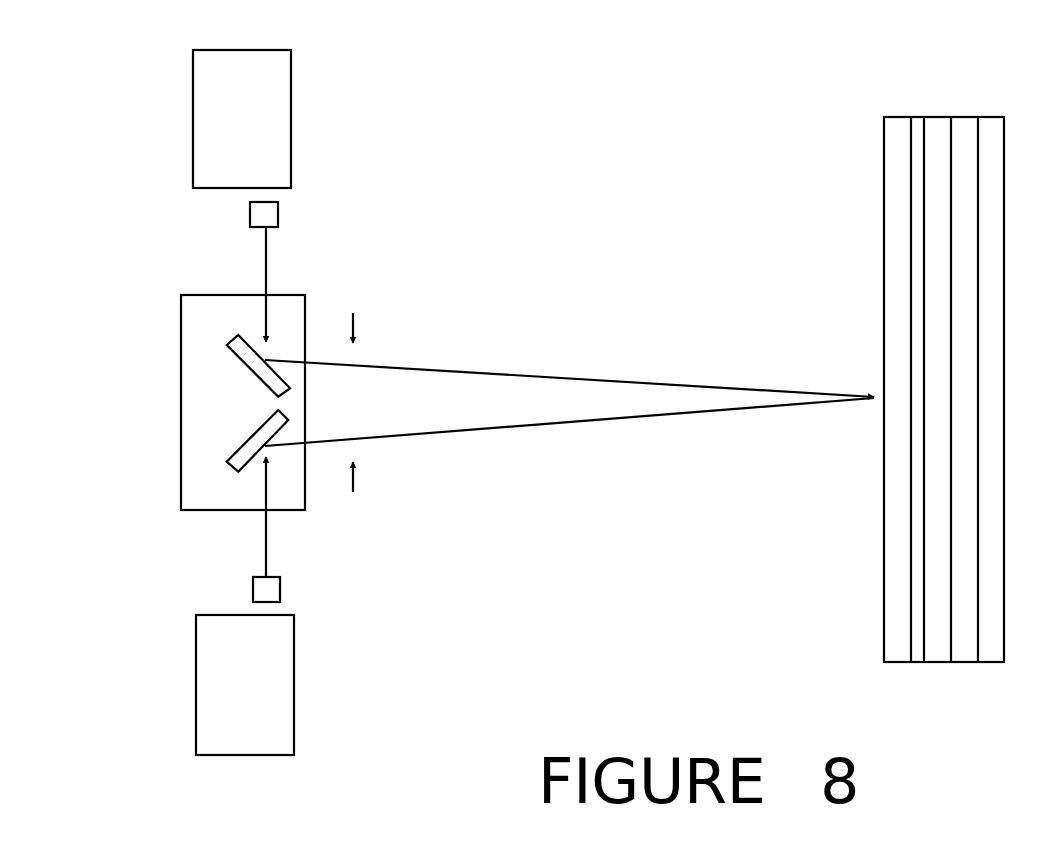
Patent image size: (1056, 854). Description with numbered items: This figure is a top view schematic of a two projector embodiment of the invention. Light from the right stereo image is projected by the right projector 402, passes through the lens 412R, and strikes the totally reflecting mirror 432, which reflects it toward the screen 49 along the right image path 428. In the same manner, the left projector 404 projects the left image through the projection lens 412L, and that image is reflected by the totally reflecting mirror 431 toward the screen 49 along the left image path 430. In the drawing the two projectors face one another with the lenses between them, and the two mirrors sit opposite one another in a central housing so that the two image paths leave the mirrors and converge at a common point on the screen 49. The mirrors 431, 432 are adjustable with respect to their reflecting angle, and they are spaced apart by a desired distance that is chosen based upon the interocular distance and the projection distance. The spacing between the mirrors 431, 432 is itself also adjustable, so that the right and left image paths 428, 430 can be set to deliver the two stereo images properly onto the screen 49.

The left projector 404 is at (291, 115).
The right projector 402 is at (294, 683).
The projection lens 412L is at (281, 212).
The lens 412R is at (281, 590).
The totally reflecting mirror 431 is at (243, 370).
The totally reflecting mirror 432 is at (248, 430).
The left image path 430 is at (586, 380).
The right image path 428 is at (563, 433).
The screen 49 is at (884, 218).